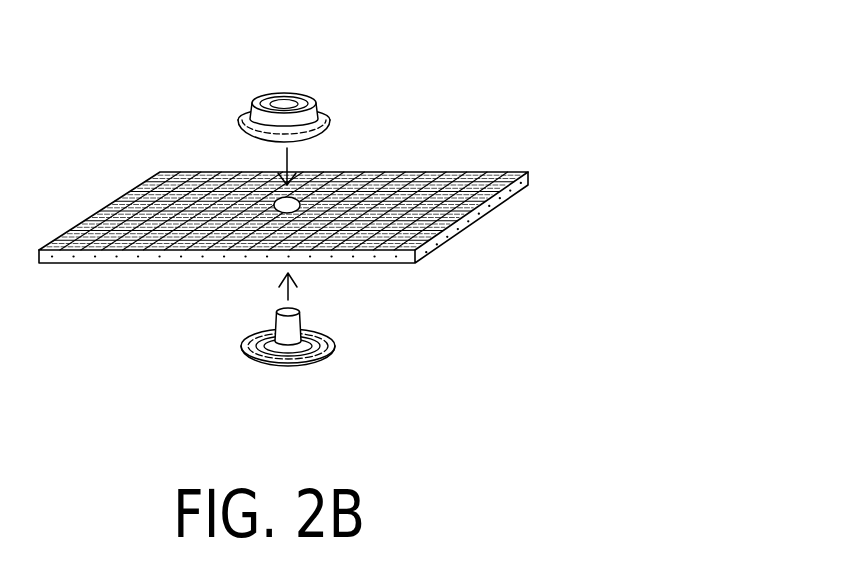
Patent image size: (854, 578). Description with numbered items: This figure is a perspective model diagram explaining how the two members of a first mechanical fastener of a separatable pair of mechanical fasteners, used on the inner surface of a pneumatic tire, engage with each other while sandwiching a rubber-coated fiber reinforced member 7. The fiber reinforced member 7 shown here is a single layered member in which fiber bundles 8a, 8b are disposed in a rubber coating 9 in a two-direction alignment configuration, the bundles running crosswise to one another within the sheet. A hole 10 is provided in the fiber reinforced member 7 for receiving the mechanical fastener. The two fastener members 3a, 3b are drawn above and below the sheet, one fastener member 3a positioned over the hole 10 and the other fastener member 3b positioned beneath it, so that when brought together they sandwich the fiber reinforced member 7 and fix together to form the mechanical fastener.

The fastener member 3a is at (292, 94).
The fastener member 3b is at (295, 352).
The rubber-coated fiber reinforced member 7 is at (295, 208).
The fiber bundles 8a is at (398, 178).
The fiber bundles 8b is at (442, 183).
The rubber coating 9 is at (115, 258).
The hole 10 is at (287, 203).